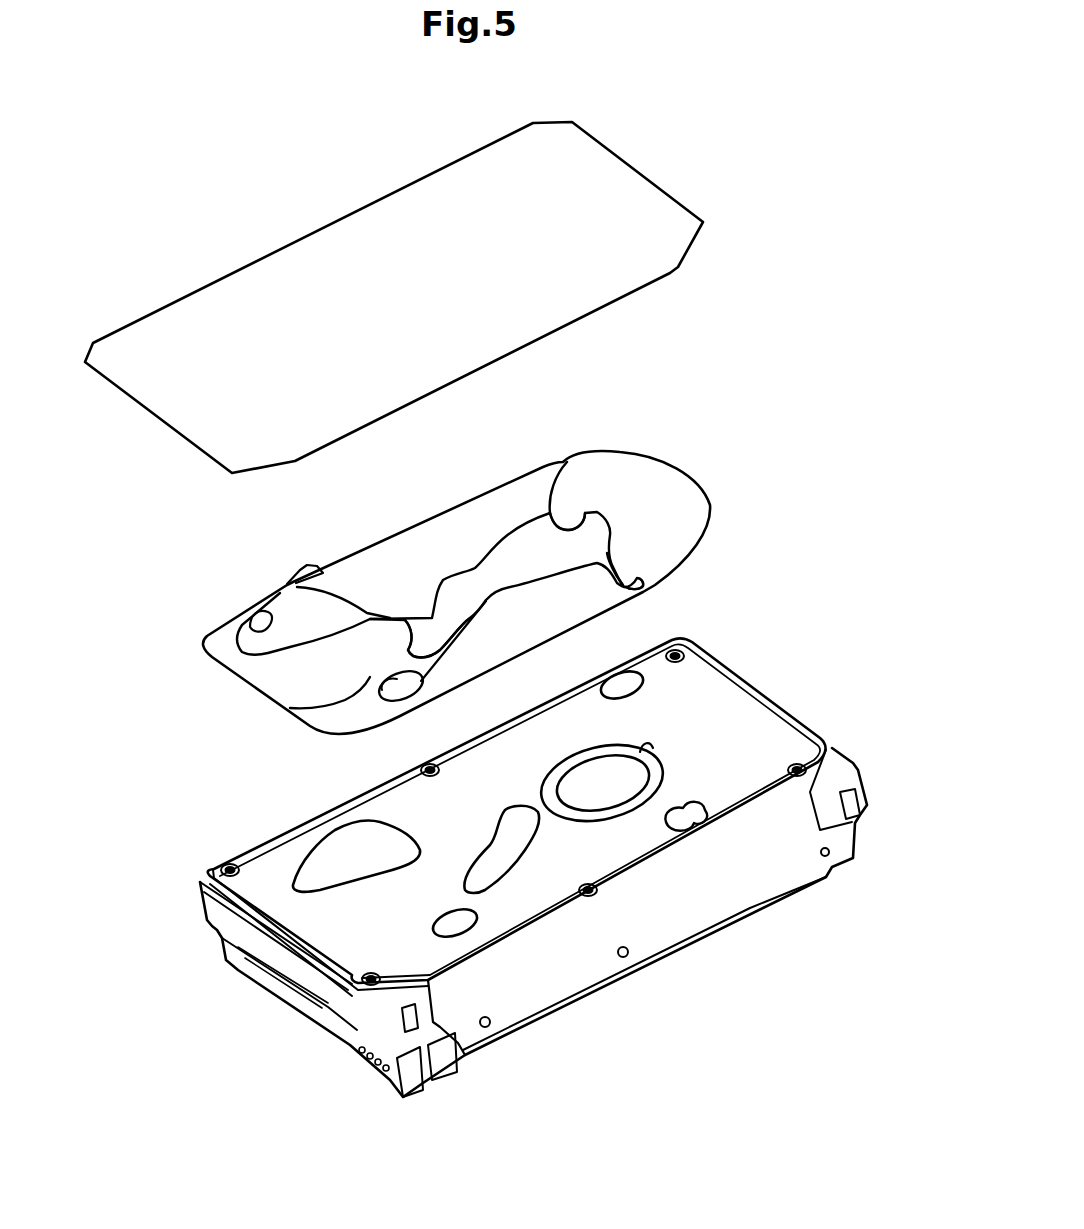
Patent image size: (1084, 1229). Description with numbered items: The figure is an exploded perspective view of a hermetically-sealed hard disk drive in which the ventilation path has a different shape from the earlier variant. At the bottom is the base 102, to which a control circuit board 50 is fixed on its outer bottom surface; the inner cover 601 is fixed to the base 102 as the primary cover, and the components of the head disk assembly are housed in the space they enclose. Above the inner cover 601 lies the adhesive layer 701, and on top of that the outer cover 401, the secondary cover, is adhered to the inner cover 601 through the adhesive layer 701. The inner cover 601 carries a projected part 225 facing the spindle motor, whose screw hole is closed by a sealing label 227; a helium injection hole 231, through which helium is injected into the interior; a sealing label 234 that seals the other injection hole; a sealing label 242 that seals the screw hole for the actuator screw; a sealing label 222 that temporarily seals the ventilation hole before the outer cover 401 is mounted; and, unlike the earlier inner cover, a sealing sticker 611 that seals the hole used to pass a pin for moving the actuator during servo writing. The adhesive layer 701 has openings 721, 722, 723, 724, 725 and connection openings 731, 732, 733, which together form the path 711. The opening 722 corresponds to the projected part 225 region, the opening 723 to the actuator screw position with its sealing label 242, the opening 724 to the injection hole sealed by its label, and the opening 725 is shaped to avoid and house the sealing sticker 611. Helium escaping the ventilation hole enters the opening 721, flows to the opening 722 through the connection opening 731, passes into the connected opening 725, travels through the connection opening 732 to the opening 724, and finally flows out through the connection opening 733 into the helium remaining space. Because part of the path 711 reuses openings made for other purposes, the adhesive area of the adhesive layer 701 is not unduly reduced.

The outer cover 401 is at (621, 158).
The adhesive layer 701 is at (693, 467).
The path 711 is at (460, 556).
The opening 721 is at (645, 597).
The opening 722 is at (570, 462).
The opening 723 is at (290, 708).
The opening 724 is at (262, 631).
The opening 725 is at (458, 613).
The connection opening 731 is at (613, 563).
The connection opening 732 is at (398, 618).
The connection opening 733 is at (323, 572).
The inner cover 601 is at (740, 713).
The sealing sticker 611 is at (537, 832).
The sealing label 222 is at (693, 807).
The projected part 225 is at (647, 742).
The sealing label 227 is at (580, 762).
The helium injection hole 231 is at (435, 923).
The sealing label 234 is at (643, 683).
The sealing label 242 is at (397, 833).
The base 102 is at (693, 923).
The control circuit board 50 is at (577, 1007).